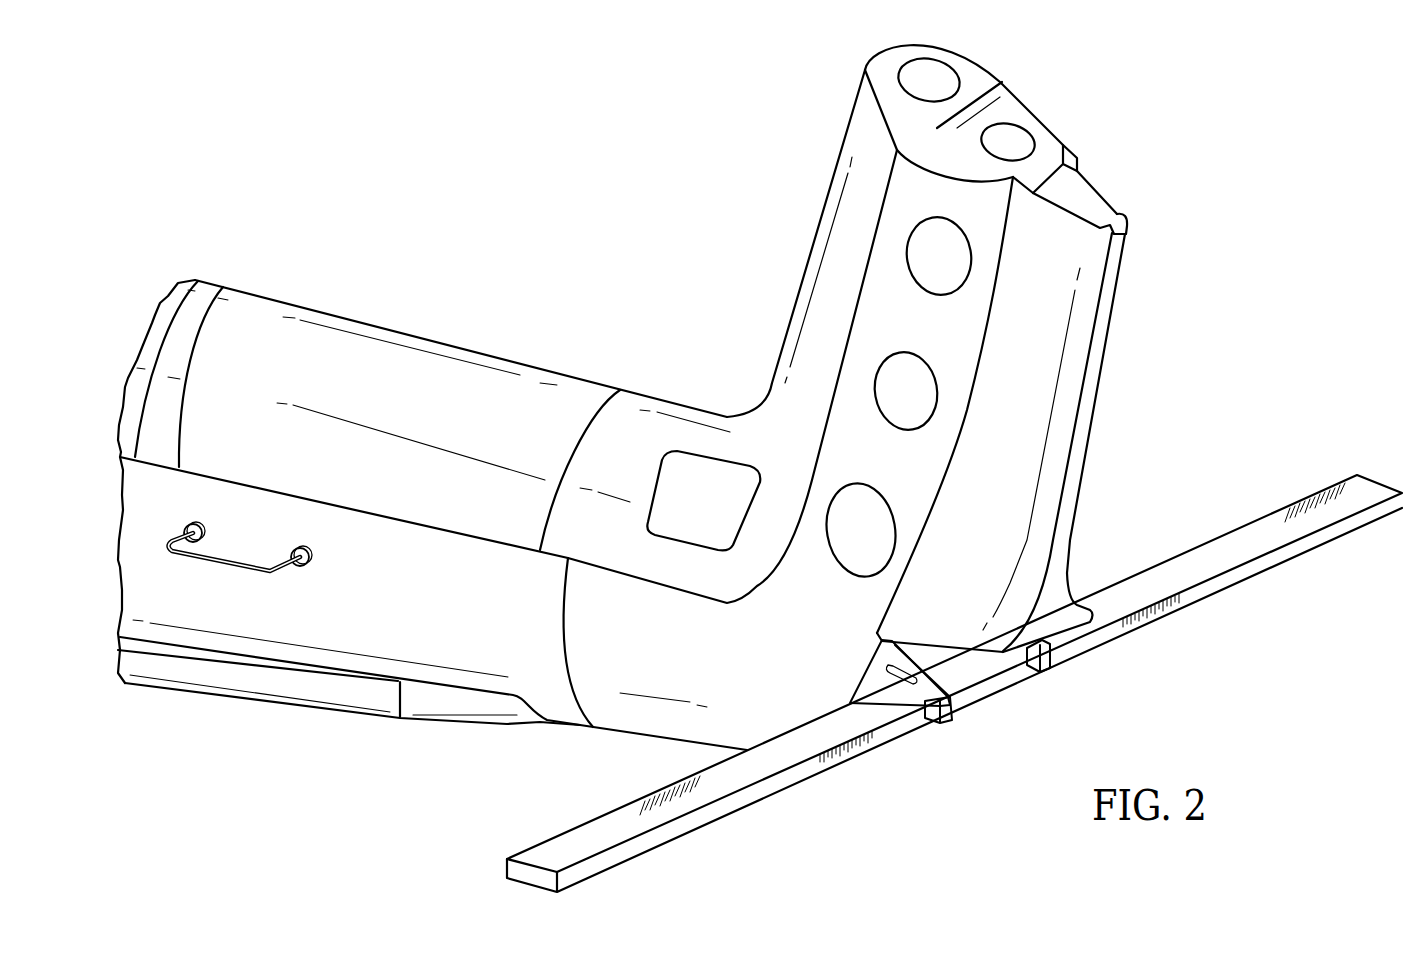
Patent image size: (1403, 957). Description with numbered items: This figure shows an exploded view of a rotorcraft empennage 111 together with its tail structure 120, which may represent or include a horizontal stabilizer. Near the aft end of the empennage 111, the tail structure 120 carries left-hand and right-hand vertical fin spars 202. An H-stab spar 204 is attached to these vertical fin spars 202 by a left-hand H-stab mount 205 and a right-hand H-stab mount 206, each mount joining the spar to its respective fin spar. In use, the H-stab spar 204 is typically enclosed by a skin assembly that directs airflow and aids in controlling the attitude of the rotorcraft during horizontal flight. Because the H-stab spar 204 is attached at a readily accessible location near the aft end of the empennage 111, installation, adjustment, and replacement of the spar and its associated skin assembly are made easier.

The empennage 111 is at (369, 750).
The tail structure 120 is at (1165, 90).
The vertical fin spar 202 is at (870, 678).
The H-stab spar 204 is at (1238, 583).
The left-hand H-stab mount 205 is at (945, 723).
The right-hand H-stab mount 206 is at (1043, 682).